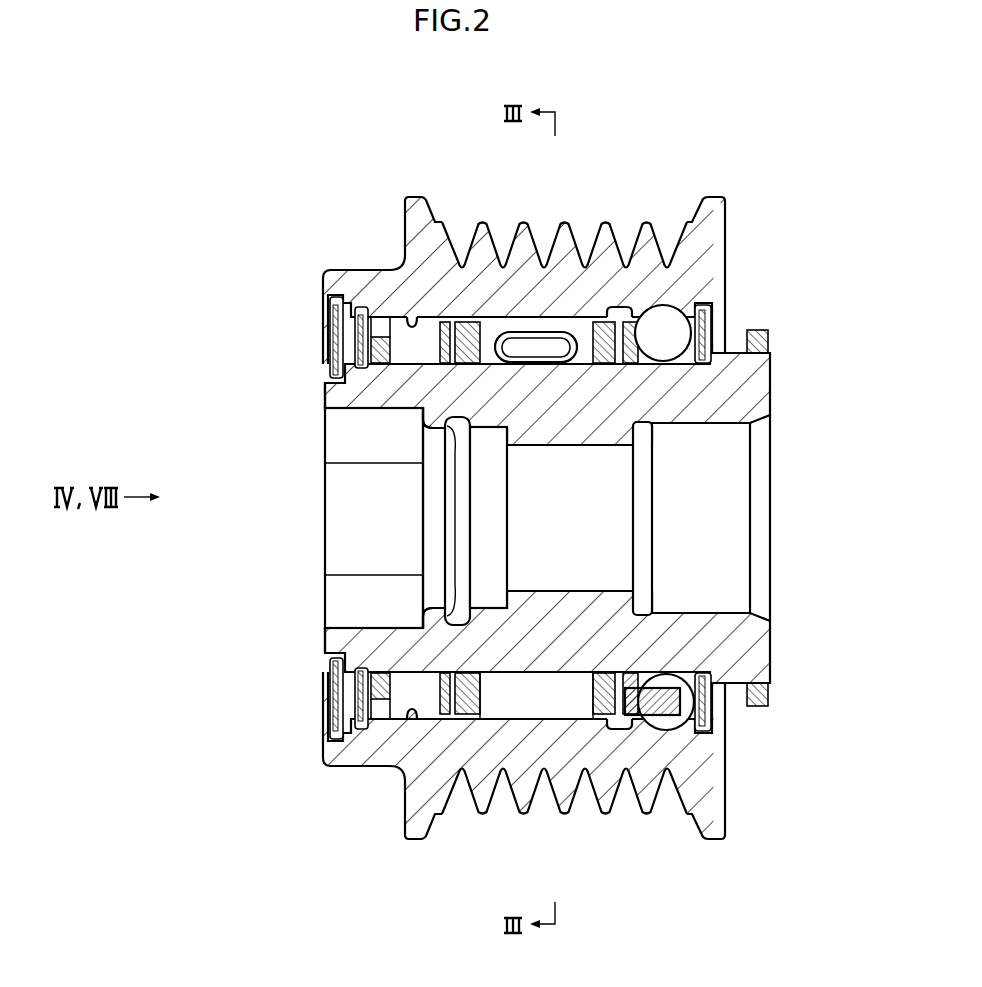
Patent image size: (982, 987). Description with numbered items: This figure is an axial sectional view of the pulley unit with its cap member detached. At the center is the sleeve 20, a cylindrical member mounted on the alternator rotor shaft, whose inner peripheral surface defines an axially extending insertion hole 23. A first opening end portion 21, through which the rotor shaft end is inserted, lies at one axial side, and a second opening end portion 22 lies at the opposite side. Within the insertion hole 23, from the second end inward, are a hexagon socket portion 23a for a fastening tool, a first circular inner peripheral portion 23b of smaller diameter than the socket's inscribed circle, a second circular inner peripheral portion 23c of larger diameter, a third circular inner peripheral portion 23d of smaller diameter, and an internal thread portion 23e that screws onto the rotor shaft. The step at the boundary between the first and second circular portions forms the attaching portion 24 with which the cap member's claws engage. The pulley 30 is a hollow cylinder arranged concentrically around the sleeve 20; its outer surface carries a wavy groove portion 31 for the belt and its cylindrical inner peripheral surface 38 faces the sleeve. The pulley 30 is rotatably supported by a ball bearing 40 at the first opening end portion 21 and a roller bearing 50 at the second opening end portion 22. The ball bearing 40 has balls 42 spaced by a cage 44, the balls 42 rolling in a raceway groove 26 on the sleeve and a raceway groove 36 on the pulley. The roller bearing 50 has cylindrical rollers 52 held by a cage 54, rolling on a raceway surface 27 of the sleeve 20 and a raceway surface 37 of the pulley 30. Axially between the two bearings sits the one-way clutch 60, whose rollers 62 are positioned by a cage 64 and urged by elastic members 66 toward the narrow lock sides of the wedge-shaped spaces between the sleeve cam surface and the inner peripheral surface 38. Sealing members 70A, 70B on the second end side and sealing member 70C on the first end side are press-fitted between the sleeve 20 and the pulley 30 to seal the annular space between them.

The sleeve 20 is at (773, 357).
The first opening end portion 21 is at (771, 397).
The second opening end portion 22 is at (323, 391).
The insertion hole 23 is at (213, 467).
The hexagon socket portion 23a is at (350, 602).
The first circular inner peripheral portion 23b is at (447, 613).
The second circular inner peripheral portion 23c is at (467, 603).
The third circular inner peripheral portion 23d is at (485, 610).
The internal thread portion 23e is at (543, 590).
The attaching portion 24 is at (447, 447).
The raceway groove 26 is at (668, 350).
The raceway surface 27 is at (405, 360).
The pulley 30 is at (730, 243).
The groove portion 31 is at (613, 235).
The raceway groove 36 is at (661, 318).
The raceway surface 37 is at (415, 313).
The inner peripheral surface 38 is at (598, 322).
The ball bearing 40 is at (684, 732).
The balls 42 is at (660, 720).
The cage 44 is at (623, 710).
The roller bearing 50 is at (397, 708).
The rollers 52 is at (404, 724).
The cage 54 is at (403, 728).
The one-way clutch 60 is at (492, 728).
The rollers 62 is at (528, 703).
The cage 64 is at (463, 322).
The elastic members 66 is at (510, 333).
The sealing member 70A is at (326, 300).
The sealing member 70B is at (358, 304).
The sealing member 70C is at (708, 321).